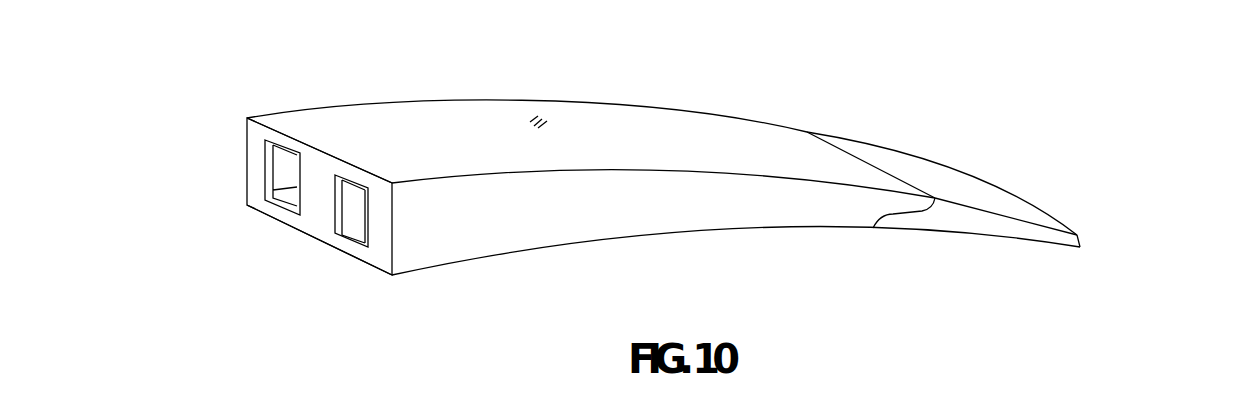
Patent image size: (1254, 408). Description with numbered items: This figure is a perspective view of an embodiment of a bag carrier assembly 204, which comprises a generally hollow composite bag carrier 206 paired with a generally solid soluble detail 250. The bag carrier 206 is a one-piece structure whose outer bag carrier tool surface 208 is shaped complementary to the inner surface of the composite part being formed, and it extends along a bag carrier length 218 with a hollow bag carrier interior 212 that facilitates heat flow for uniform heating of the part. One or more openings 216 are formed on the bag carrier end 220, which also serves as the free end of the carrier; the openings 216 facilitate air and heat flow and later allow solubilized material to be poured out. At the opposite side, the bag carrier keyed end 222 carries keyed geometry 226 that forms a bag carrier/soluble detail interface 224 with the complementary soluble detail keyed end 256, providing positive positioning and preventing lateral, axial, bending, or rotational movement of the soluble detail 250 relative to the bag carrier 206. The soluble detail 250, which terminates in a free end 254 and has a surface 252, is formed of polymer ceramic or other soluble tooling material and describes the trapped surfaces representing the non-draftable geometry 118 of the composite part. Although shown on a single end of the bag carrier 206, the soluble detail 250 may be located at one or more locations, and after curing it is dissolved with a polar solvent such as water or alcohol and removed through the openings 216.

The non-draftable geometry 118 is at (992, 237).
The bag carrier assembly 204 is at (658, 110).
The bag carrier 206 is at (388, 100).
The bag carrier tool surface 208 is at (533, 118).
The hollow bag carrier interior 212 is at (290, 173).
The openings 216 is at (277, 204).
The bag carrier length 218 is at (613, 238).
The bag carrier end 220 is at (247, 118).
The bag carrier keyed end 222 is at (807, 132).
The bag carrier/soluble detail interface 224 is at (897, 216).
The keyed geometry 226 is at (887, 220).
The soluble detail 250 is at (1010, 213).
The tapered surface 252 is at (903, 158).
The free end 254 is at (1082, 245).
The soluble detail keyed end 256 is at (810, 130).